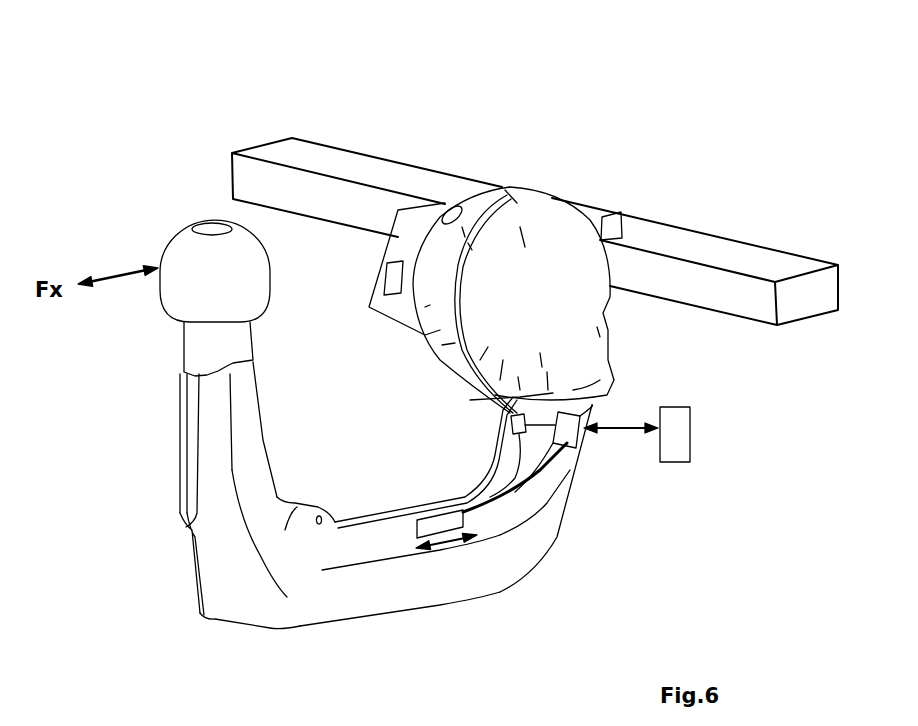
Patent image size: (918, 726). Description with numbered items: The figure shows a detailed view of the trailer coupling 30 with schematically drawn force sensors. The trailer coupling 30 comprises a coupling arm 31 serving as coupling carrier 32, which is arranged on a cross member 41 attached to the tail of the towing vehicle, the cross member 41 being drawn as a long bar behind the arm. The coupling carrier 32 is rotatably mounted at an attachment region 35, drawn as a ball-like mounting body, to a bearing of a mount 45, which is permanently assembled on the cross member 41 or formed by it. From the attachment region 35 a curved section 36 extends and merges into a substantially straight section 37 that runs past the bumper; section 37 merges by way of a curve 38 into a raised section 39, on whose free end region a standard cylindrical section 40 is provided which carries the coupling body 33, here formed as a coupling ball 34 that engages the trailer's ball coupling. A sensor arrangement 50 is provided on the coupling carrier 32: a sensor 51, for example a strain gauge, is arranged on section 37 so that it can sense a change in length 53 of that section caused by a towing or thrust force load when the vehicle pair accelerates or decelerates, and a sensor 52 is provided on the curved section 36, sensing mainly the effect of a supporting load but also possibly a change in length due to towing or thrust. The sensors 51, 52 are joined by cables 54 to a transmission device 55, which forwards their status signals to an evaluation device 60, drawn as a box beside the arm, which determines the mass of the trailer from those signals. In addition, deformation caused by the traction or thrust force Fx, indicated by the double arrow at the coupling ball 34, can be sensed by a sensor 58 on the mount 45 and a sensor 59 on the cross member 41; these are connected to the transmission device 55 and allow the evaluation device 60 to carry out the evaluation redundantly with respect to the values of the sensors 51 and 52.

The trailer coupling 30 is at (107, 124).
The coupling arm 31 is at (370, 541).
The coupling carrier 32 is at (258, 626).
The coupling body 33 is at (231, 253).
The coupling ball 34 is at (187, 237).
The attachment region 35 is at (537, 198).
The curved section 36 is at (557, 478).
The section 37 is at (363, 595).
The curve 38 is at (213, 567).
The raised section 39 is at (203, 463).
The cylindrical section 40 is at (203, 352).
The cross member 41 is at (362, 155).
The mount 45 is at (395, 307).
The sensor arrangement 50 is at (400, 496).
The sensor 51 is at (442, 520).
The sensor 52 is at (515, 423).
The change in length 53 is at (480, 535).
The cables 54 is at (505, 465).
The transmission device 55 is at (575, 422).
The sensor 58 is at (393, 275).
The sensor 59 is at (617, 228).
The evaluation device 60 is at (677, 417).